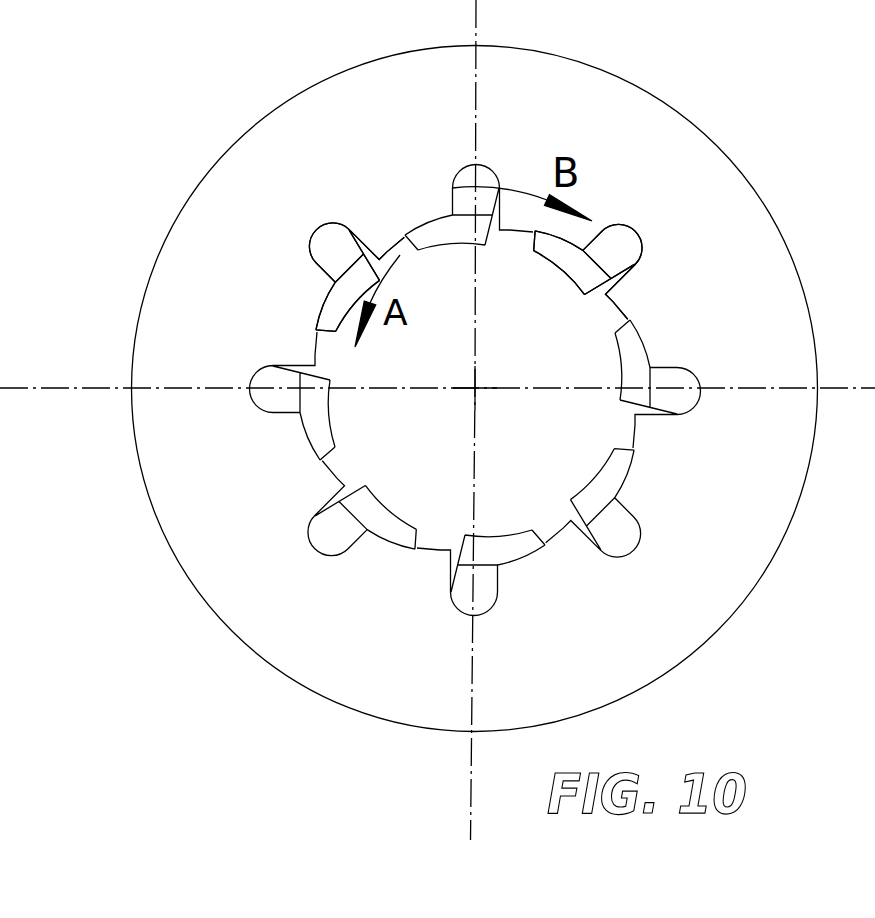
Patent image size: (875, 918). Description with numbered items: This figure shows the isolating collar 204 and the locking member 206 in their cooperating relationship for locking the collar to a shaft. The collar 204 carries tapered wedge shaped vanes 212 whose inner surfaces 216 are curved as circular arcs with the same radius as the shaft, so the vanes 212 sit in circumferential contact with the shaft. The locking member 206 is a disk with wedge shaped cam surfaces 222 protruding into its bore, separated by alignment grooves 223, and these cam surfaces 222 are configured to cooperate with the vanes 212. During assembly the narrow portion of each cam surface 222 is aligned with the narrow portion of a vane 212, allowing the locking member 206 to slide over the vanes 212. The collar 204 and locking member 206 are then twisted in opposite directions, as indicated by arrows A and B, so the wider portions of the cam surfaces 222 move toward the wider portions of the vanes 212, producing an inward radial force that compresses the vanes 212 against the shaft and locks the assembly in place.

The collar 204 is at (333, 250).
The locking member 206 is at (353, 630).
The vanes 212 is at (347, 307).
The inner surfaces of the vanes 216 is at (613, 365).
The cam surfaces 222 is at (405, 236).
The alignment grooves 223 is at (636, 225).